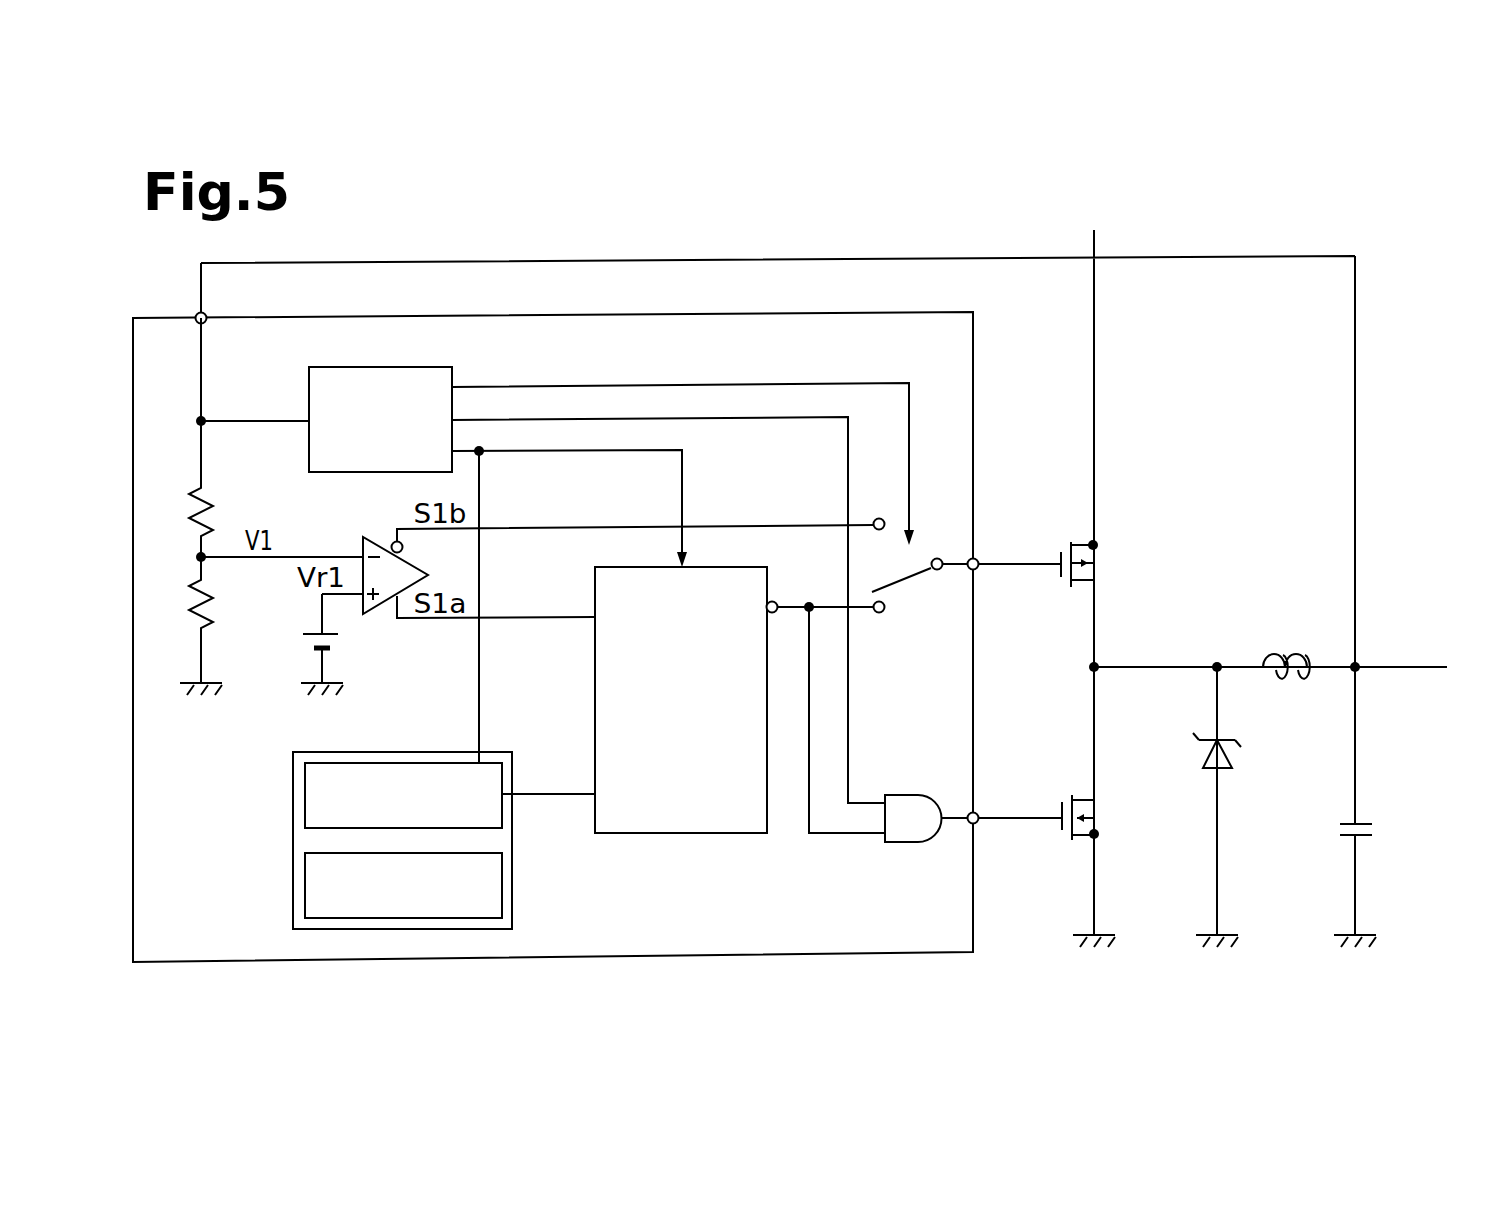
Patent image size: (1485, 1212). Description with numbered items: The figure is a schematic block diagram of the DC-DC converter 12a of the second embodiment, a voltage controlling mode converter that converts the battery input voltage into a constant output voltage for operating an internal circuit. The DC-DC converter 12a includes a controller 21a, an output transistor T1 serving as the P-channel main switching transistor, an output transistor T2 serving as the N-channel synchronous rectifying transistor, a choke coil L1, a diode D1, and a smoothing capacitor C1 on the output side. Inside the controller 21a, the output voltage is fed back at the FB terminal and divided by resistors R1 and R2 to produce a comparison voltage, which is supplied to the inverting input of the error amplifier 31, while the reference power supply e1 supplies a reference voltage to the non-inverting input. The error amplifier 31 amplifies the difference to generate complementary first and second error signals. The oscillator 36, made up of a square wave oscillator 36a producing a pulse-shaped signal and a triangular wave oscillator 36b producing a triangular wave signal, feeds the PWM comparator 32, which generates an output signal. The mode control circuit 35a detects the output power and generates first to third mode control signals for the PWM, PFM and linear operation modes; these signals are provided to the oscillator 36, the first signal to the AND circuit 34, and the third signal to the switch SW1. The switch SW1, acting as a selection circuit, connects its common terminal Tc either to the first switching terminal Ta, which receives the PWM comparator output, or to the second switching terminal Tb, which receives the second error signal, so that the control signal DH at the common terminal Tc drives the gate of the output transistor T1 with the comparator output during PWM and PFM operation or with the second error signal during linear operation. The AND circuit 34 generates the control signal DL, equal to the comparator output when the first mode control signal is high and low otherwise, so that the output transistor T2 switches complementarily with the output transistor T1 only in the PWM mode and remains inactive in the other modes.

The DC-DC converter 12a is at (1389, 206).
The controller 21a is at (975, 358).
The error amplifier 31 is at (363, 540).
The PWM comparator 32 is at (727, 564).
The AND circuit 34 is at (905, 795).
The mode control circuit 35a is at (432, 367).
The oscillator 36 is at (503, 752).
The square wave oscillator 36a is at (305, 884).
The triangular wave oscillator 36b is at (305, 794).
The resistor R1 is at (212, 500).
The resistor R2 is at (212, 594).
The reference power supply e1 is at (327, 650).
The output transistor T1 is at (1080, 542).
The output transistor T2 is at (1080, 795).
The choke coil L1 is at (1285, 654).
The diode D1 is at (1232, 752).
The smoothing capacitor C1 is at (1345, 825).
The switch SW1 is at (903, 582).
The first switching terminal Ta is at (878, 613).
The second switching terminal Tb is at (879, 517).
The common terminal Tc is at (937, 557).
The control signal DH is at (992, 550).
The control signal DL is at (991, 804).
The feedback terminal FB is at (201, 318).